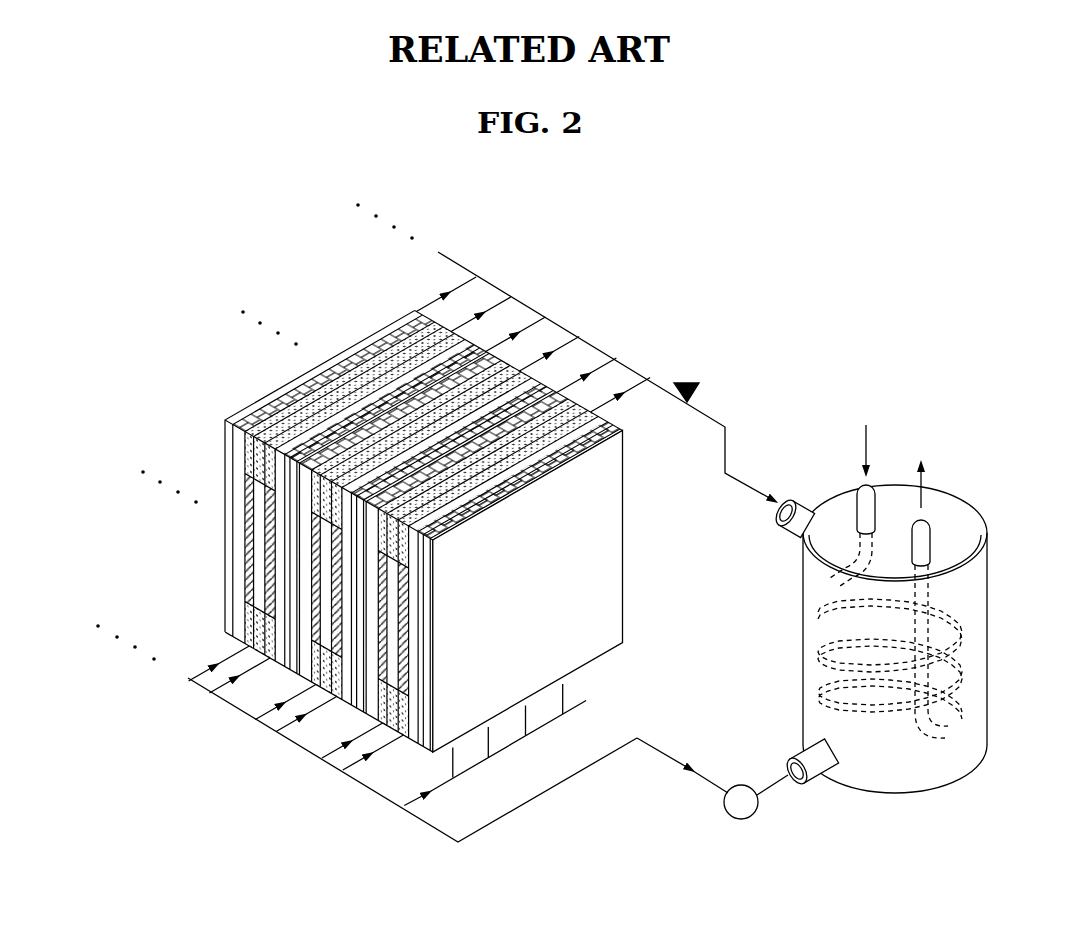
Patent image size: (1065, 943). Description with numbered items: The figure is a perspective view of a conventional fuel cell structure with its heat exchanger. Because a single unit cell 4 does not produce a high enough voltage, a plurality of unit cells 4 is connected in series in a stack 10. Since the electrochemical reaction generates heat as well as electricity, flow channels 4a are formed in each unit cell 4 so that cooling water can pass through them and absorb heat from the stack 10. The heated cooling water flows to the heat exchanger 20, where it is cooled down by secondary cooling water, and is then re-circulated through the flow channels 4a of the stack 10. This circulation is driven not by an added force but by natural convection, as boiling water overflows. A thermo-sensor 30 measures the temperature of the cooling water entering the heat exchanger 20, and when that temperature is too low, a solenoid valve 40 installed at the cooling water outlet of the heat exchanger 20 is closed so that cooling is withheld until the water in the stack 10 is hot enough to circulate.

The unit cell 4 is at (464, 532).
The flow channels 4a is at (623, 447).
The stack 10 is at (347, 800).
The heat exchanger 20 is at (986, 789).
The thermo-sensor 30 is at (693, 381).
The solenoid valve 40 is at (724, 807).